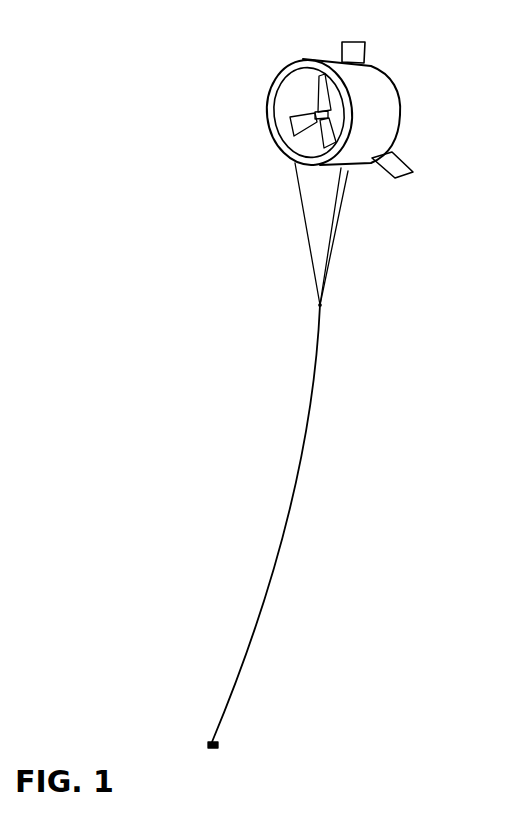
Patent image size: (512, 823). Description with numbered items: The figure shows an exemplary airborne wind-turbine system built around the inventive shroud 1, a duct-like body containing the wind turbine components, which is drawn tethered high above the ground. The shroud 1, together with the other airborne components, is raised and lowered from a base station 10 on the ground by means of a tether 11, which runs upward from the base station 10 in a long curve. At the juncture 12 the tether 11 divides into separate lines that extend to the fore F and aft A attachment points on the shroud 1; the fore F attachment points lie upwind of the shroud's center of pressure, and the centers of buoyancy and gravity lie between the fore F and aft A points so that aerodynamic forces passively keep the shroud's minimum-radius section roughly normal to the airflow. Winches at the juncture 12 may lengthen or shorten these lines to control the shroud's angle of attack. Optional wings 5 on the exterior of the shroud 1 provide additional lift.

The shroud 1 is at (404, 129).
The wings 5 is at (365, 43).
The fore attachment points F is at (332, 183).
The aft attachment point A is at (350, 175).
The juncture 12 is at (321, 306).
The tether 11 is at (305, 427).
The base station 10 is at (218, 743).